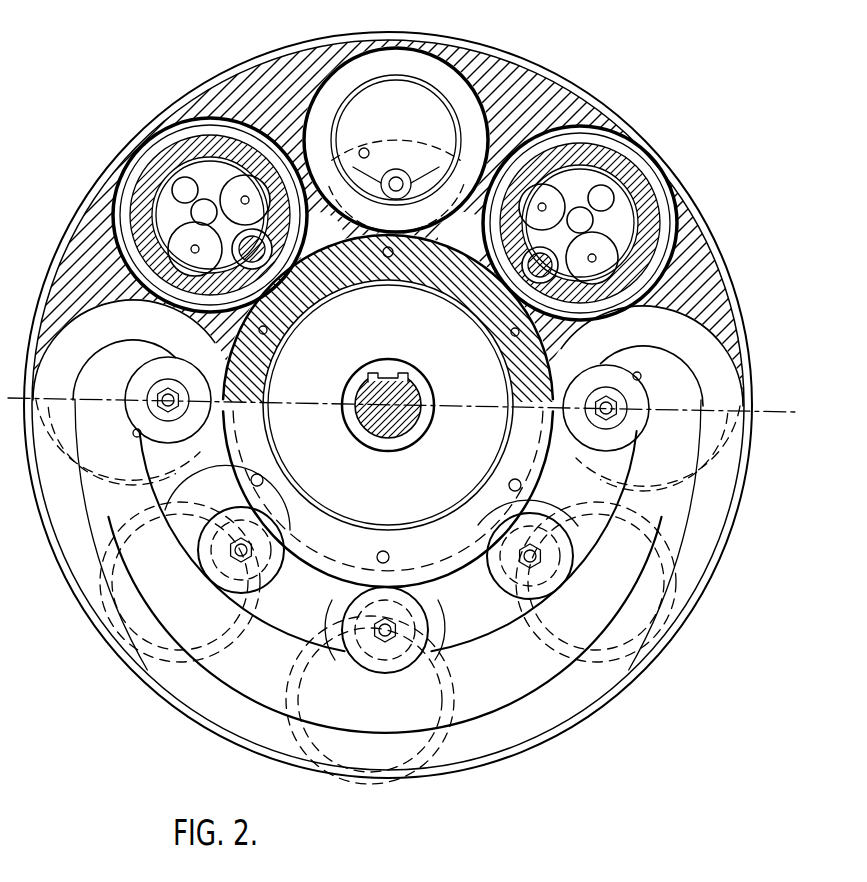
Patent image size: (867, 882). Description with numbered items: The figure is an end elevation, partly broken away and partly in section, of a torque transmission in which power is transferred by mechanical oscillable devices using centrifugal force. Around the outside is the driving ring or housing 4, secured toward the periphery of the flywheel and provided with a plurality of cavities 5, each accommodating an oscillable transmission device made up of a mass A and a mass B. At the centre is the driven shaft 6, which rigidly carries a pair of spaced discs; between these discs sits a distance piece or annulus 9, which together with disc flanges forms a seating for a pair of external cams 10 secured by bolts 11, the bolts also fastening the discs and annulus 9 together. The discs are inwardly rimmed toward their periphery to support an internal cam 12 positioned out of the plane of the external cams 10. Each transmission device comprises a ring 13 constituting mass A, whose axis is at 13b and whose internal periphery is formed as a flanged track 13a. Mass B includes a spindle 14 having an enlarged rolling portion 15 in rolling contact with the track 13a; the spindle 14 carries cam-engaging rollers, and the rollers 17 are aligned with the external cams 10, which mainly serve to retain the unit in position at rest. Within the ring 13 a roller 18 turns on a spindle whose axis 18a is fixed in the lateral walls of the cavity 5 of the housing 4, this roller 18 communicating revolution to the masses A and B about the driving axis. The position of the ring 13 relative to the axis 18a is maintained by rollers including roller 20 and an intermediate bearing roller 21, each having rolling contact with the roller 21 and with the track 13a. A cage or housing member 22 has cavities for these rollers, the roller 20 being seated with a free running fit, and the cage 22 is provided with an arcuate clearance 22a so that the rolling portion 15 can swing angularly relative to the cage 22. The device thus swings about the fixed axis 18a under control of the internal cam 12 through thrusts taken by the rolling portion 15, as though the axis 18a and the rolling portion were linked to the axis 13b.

The driving ring or housing 4 is at (498, 65).
The cavity 5 is at (183, 118).
The driven shaft 6 is at (432, 382).
The distance piece or annulus 9 is at (372, 265).
The external cam 10 is at (252, 428).
The bolt 11 is at (268, 331).
The internal cam 12 is at (110, 535).
The ring 13 is at (612, 145).
The flanged track 13a is at (628, 165).
The axis of ring 13b is at (245, 178).
The spindle 14 is at (515, 558).
The enlarged rolling portion 15 is at (275, 188).
The cam-engaging roller 17 is at (262, 522).
The roller 18 is at (577, 128).
The axis of roller spindle 18a is at (192, 240).
The roller 20 is at (186, 190).
The intermediate bearing roller 21 is at (200, 212).
The cage or housing member 22 is at (442, 595).
The arcuate clearance 22a is at (203, 173).
The mass A is at (656, 200).
The mass B is at (677, 283).